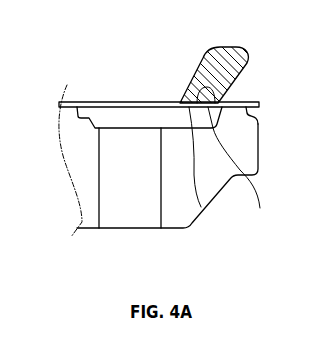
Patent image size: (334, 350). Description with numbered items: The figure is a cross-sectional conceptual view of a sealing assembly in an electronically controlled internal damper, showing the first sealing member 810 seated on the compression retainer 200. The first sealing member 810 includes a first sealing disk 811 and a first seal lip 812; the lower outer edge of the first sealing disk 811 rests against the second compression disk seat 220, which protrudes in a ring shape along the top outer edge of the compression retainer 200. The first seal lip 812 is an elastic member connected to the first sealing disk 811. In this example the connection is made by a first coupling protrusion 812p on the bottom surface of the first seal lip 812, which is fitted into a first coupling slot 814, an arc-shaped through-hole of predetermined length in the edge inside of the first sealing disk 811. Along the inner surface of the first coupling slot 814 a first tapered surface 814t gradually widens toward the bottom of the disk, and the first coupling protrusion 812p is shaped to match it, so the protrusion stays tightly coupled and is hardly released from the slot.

The compression retainer 200 is at (258, 148).
The second compression disk seat 220 is at (250, 111).
The first sealing member 810 is at (157, 42).
The first sealing disk 811 is at (115, 102).
The first seal lip 812 is at (195, 76).
The first coupling protrusion 812p is at (214, 96).
The first coupling slot 814 is at (236, 185).
The first tapered surface 814t is at (267, 233).